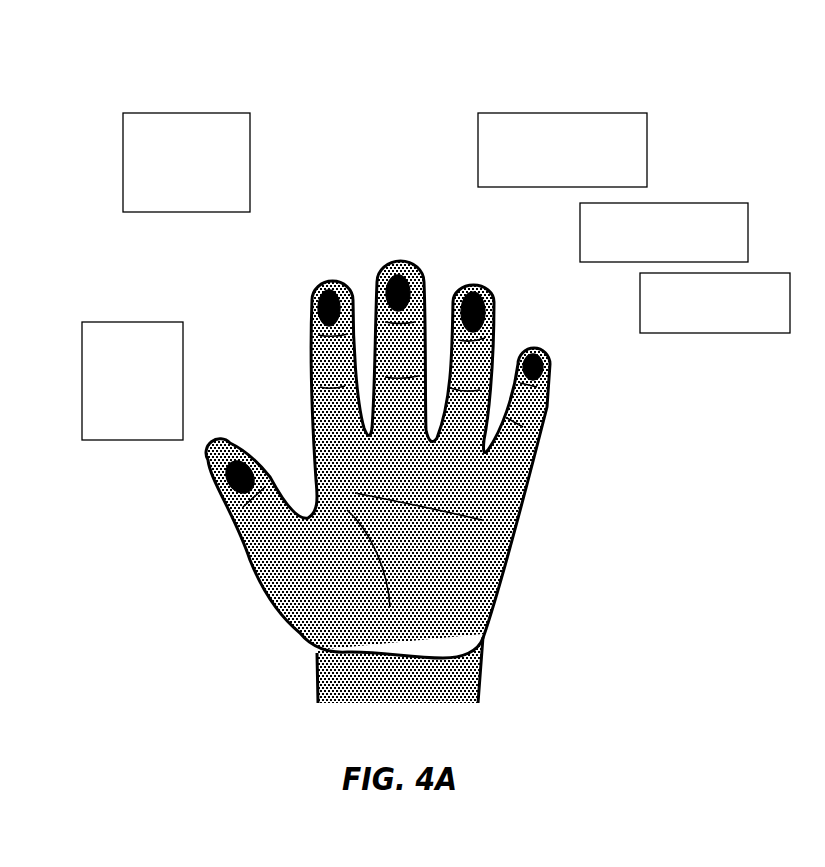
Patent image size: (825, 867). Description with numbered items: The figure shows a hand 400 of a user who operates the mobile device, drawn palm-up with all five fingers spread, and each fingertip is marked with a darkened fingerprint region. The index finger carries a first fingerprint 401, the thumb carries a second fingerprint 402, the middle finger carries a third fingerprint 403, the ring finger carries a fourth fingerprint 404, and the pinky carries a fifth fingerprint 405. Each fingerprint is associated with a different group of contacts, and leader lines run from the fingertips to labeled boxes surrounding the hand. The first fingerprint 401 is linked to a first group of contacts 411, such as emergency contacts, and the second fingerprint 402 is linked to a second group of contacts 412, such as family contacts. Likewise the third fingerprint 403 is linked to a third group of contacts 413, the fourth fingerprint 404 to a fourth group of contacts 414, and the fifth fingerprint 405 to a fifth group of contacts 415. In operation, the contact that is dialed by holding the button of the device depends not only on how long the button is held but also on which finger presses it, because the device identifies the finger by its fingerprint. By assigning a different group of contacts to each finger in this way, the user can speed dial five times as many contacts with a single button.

The hand 400 is at (270, 103).
The first fingerprint 401 is at (318, 300).
The second fingerprint 402 is at (222, 474).
The third fingerprint 403 is at (393, 275).
The fourth fingerprint 404 is at (493, 307).
The fifth fingerprint 405 is at (547, 367).
The first group of contacts 411 is at (310, 292).
The second group of contacts 412 is at (221, 445).
The third group of contacts 413 is at (420, 275).
The fourth group of contacts 414 is at (493, 307).
The fifth group of contacts 415 is at (547, 367).